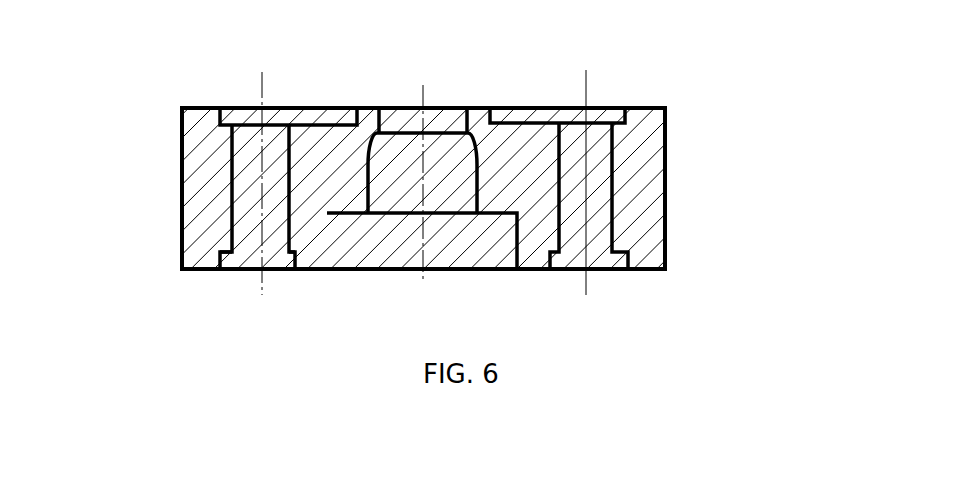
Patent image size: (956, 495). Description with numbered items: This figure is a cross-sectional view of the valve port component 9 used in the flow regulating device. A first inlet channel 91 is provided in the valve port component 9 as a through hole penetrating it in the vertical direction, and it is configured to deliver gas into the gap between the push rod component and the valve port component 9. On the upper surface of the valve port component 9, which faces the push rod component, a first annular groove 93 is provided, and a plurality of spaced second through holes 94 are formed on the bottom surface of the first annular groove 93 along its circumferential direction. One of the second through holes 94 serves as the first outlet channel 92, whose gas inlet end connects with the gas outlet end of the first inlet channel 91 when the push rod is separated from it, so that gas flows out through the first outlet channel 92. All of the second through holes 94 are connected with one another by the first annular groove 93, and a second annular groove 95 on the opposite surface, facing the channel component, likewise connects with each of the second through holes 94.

The valve port component 9 is at (642, 190).
The first inlet channel 91 is at (405, 120).
The first outlet channel 92 is at (645, 168).
The first annular groove 93 is at (613, 119).
The second through holes 94 is at (262, 193).
The second annular groove 95 is at (240, 260).